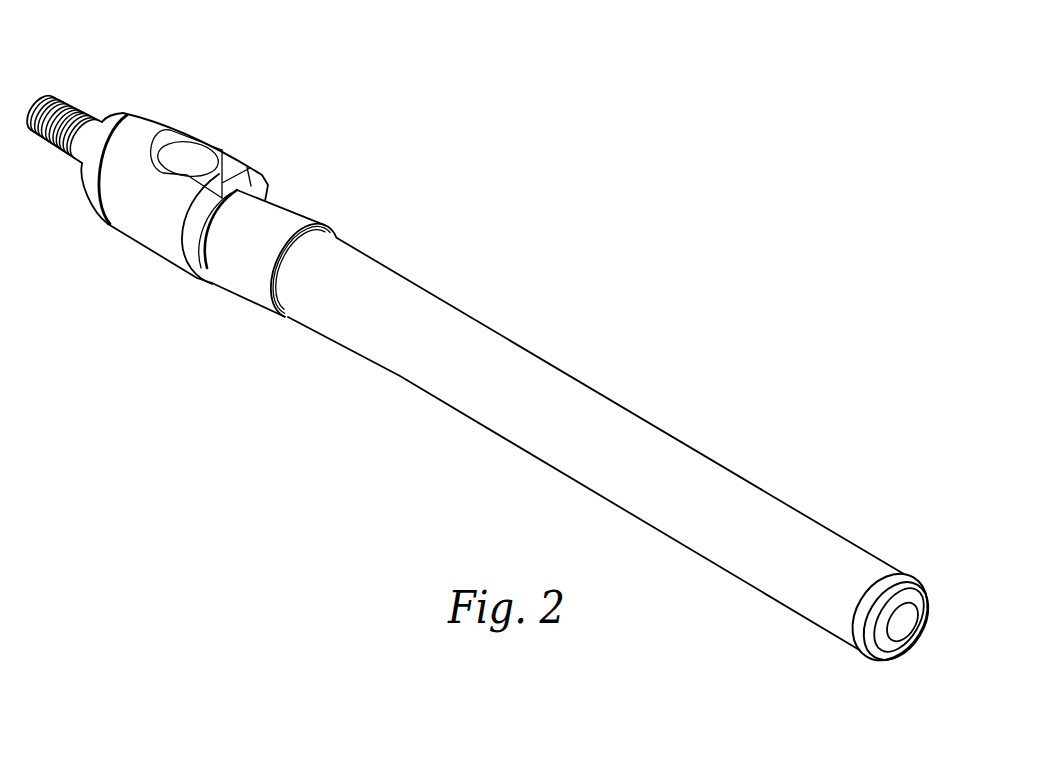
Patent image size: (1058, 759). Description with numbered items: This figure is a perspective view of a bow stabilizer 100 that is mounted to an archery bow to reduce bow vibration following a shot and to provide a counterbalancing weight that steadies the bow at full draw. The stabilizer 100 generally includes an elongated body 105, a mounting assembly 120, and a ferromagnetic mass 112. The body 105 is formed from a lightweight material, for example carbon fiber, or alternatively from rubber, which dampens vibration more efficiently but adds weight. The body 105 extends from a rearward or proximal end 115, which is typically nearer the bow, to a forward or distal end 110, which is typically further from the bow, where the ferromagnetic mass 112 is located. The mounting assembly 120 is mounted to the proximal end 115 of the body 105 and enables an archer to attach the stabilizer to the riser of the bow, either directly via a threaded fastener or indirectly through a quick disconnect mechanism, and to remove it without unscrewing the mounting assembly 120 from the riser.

The stabilizer 100 is at (630, 148).
The body 105 is at (556, 335).
The distal end 110 is at (924, 554).
The ferromagnetic mass 112 is at (878, 662).
The proximal end 115 is at (366, 218).
The mounting assembly 120 is at (270, 128).